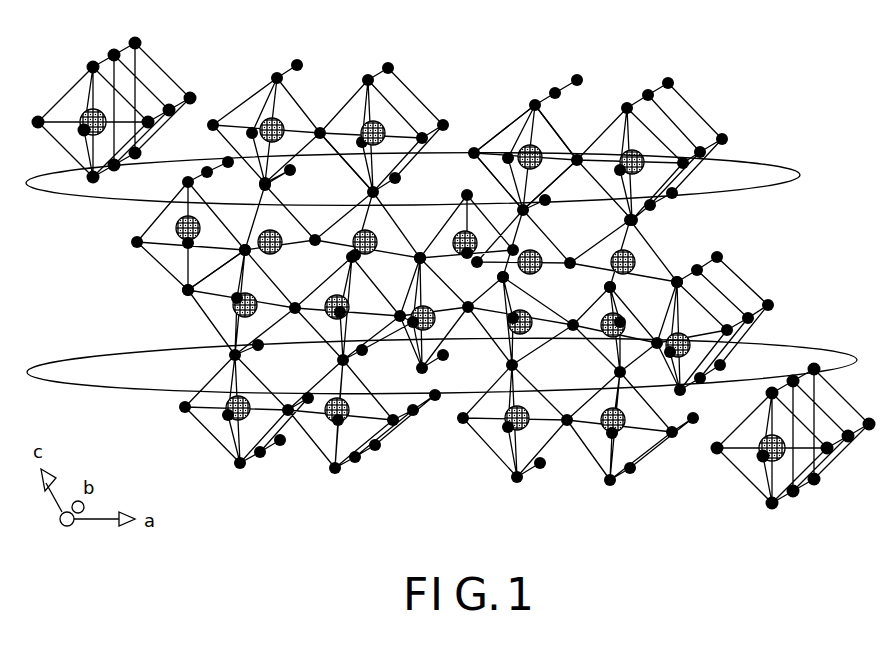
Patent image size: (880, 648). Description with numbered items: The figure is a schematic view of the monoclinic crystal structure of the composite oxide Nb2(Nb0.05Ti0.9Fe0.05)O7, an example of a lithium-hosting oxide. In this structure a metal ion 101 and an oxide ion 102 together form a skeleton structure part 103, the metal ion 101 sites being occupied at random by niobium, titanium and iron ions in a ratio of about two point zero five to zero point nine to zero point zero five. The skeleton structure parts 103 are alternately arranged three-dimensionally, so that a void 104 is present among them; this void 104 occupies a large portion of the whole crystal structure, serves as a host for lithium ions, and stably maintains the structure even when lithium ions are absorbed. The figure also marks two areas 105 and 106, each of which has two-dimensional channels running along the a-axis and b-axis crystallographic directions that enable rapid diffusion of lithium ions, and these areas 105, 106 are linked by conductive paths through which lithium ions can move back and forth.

The metal ion 101 is at (382, 124).
The oxide ion 102 is at (299, 61).
The skeleton structure part 103 is at (504, 121).
The void 104 is at (323, 187).
The area 105 is at (770, 165).
The area 106 is at (814, 347).